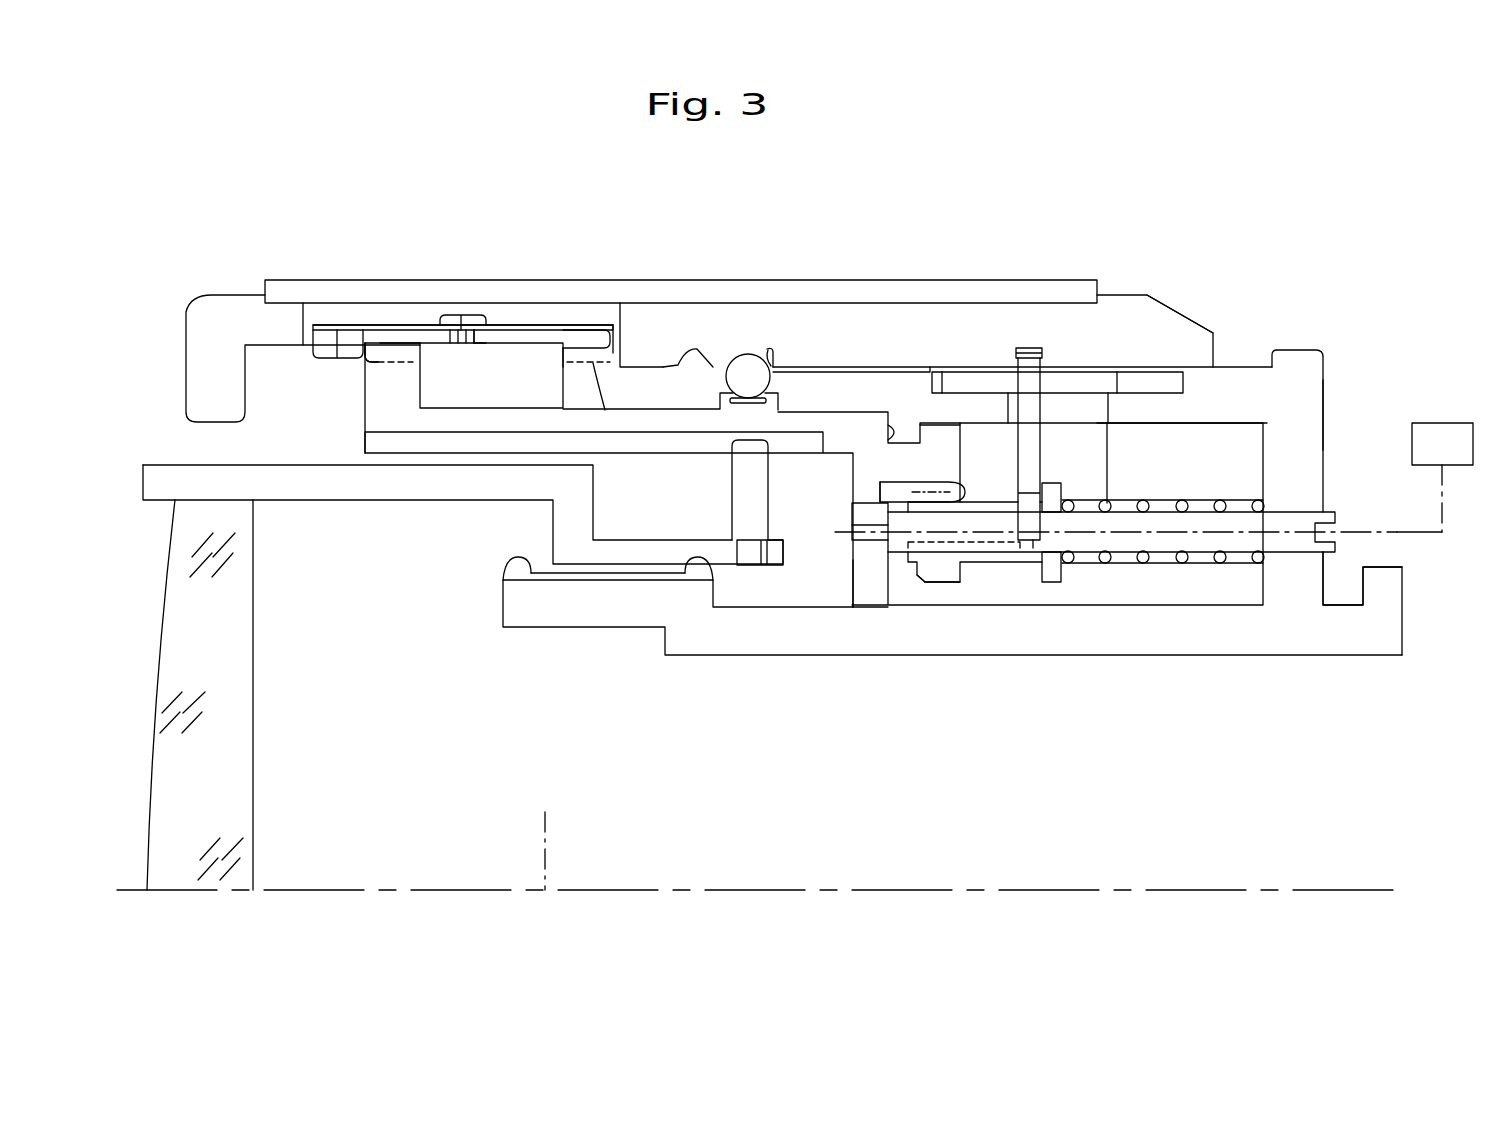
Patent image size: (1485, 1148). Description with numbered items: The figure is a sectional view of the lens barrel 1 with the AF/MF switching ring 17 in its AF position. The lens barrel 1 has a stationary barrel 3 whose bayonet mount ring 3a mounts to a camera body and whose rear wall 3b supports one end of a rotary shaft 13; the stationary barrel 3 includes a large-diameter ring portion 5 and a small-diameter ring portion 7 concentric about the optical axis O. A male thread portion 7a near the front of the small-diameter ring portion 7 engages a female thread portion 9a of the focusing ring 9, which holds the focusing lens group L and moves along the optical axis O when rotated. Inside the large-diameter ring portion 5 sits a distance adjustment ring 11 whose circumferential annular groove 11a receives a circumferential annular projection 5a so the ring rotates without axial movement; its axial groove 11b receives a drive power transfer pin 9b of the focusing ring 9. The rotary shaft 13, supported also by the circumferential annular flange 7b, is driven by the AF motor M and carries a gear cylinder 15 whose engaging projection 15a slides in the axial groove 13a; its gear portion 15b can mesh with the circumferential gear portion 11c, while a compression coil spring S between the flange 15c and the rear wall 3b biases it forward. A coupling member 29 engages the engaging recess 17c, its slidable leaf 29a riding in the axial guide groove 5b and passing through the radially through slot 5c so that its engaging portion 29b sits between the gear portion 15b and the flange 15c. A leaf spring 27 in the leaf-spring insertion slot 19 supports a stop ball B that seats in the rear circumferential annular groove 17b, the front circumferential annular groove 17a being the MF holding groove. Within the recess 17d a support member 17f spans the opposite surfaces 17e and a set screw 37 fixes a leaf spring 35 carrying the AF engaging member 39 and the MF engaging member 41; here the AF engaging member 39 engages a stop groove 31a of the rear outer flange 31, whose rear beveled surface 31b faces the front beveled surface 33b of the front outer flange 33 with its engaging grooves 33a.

The lens barrel 1 is at (240, 260).
The stationary barrel 3 is at (1305, 370).
The bayonet mount ring 3a is at (1390, 588).
The rear wall 3b is at (1315, 412).
The large-diameter ring portion 5 is at (850, 380).
The circumferential annular projection 5a is at (913, 432).
The axial guide groove 5b is at (1170, 390).
The radially through slot 5c is at (1100, 428).
The small-diameter ring portion 7 is at (1203, 640).
The male thread portion 7a is at (530, 557).
The circumferential annular flange 7b is at (862, 573).
The focusing ring 9 is at (263, 480).
The female thread portion 9a is at (617, 573).
The drive power transfer pin 9b is at (750, 481).
The distance adjustment ring 11 is at (442, 422).
The circumferential annular groove 11a is at (890, 435).
The axial groove 11b is at (377, 447).
The circumferential gear portion 11c is at (883, 484).
The rotary shaft 13 is at (1167, 523).
The axial groove 13a is at (990, 545).
The gear cylinder 15 is at (1013, 560).
The engaging projection 15a is at (937, 553).
The gear portion 15b is at (920, 580).
The flange 15c is at (1061, 492).
The AF/MF switching ring 17 is at (1175, 327).
The front circumferential annular groove 17a is at (688, 347).
The rear circumferential annular groove 17b is at (750, 353).
The engaging recess 17c is at (1035, 353).
The recess 17d is at (398, 312).
The opposite surface 17e is at (327, 313).
The support member 17f is at (482, 337).
The leaf-spring insertion slot 19 is at (762, 360).
The leaf spring 27 is at (733, 403).
The coupling member 29 is at (1027, 358).
The slidable leaf 29a is at (970, 383).
The engaging portion 29b is at (1033, 545).
The rear outer flange 31 is at (563, 363).
The stop groove 31a is at (593, 363).
The rear beveled surface 31b is at (620, 353).
The front outer flange 33 is at (418, 353).
The engaging groove 33a is at (383, 362).
The front beveled surface 33b is at (365, 357).
The leaf spring 35 is at (543, 322).
The set screw 37 is at (453, 315).
The AF engaging member 39 is at (608, 337).
The MF engaging member 41 is at (353, 333).
The stop ball B is at (747, 370).
The focusing lens group L is at (240, 683).
The AF motor M is at (1442, 477).
The optical axis O is at (547, 829).
The compression coil spring S is at (1217, 500).